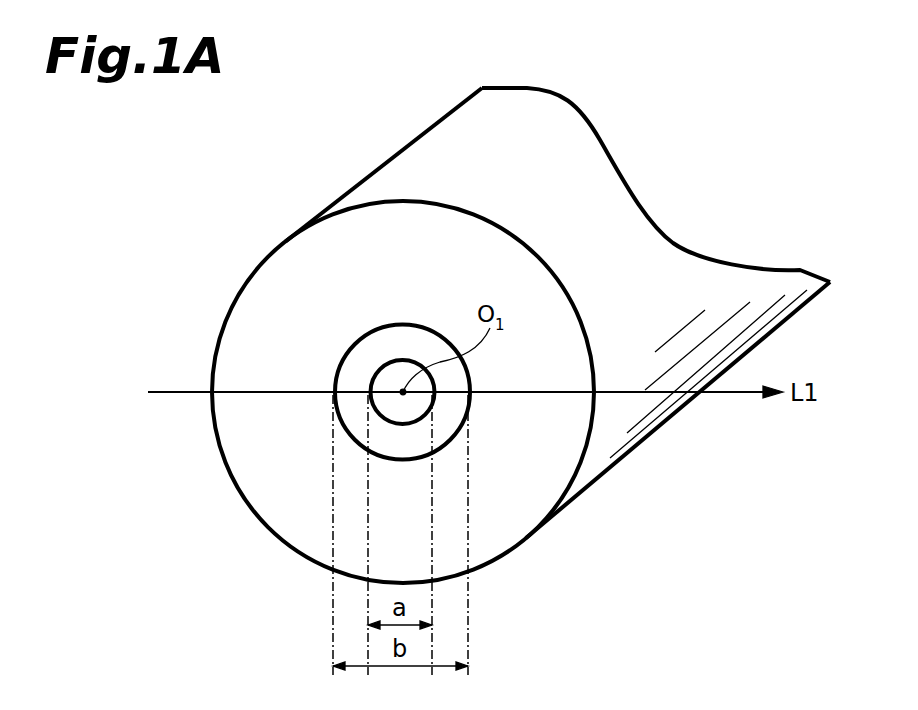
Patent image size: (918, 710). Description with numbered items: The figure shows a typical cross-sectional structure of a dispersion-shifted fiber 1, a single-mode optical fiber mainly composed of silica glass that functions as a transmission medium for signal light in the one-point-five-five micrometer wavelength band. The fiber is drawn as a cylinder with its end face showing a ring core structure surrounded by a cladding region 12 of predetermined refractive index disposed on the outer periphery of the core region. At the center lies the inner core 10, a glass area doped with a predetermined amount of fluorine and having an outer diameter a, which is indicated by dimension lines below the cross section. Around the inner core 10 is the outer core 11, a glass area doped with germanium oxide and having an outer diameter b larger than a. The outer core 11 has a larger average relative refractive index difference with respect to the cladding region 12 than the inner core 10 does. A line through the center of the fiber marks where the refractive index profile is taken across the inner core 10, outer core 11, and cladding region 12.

The dispersion-shifted fiber 1 is at (622, 270).
The inner core 10 is at (403, 377).
The outer core 11 is at (348, 413).
The cladding region 12 is at (306, 272).